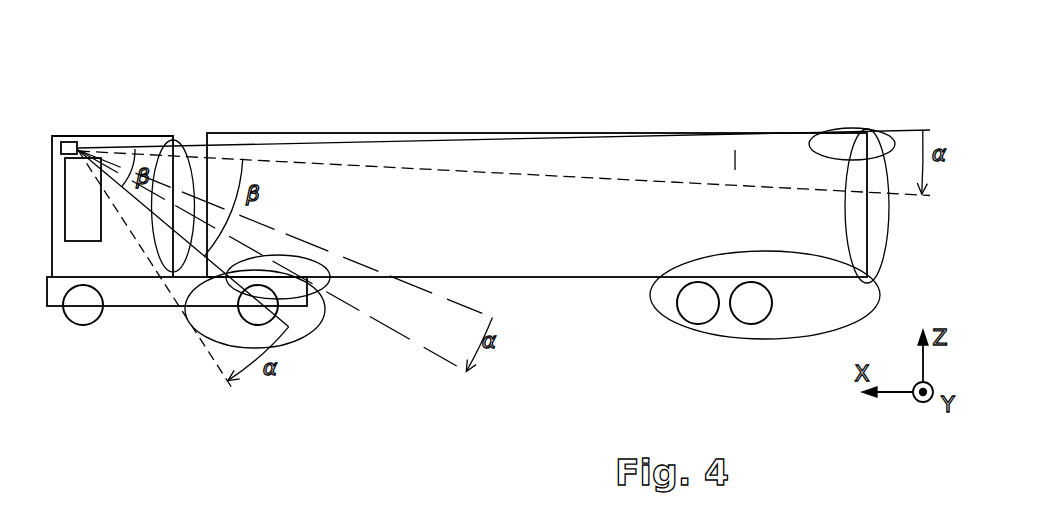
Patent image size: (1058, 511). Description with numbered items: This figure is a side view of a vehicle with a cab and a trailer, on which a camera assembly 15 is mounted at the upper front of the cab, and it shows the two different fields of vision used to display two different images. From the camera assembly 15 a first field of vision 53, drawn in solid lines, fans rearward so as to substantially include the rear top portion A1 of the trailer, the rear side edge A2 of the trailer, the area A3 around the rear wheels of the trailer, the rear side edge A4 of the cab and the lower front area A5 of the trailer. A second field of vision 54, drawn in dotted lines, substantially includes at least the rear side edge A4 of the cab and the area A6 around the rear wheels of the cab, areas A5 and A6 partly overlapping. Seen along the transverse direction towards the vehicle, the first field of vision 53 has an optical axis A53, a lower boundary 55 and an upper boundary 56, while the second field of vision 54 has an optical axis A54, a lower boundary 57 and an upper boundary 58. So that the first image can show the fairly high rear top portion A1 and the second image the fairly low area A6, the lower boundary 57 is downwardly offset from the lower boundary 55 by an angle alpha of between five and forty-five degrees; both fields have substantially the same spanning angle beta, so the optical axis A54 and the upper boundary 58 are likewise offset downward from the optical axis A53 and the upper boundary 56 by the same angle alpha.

The camera assembly 15 is at (69, 141).
The first field of vision 53 is at (786, 118).
The second field of vision 54 is at (735, 150).
The lower boundary 55 is at (280, 326).
The upper boundary 56 is at (808, 129).
The lower boundary 57 is at (215, 378).
The upper boundary 58 is at (655, 180).
The rear top portion of the trailer A1 is at (868, 129).
The rear side edge of the trailer A2 is at (888, 231).
The area around the rear wheels of the trailer A3 is at (652, 308).
The rear side edge of the cab A4 is at (191, 158).
The lower front area of the trailer A5 is at (318, 261).
The area around the rear wheels of the cab A6 is at (322, 337).
The optical axis A53 is at (468, 306).
The optical axis A54 is at (411, 342).